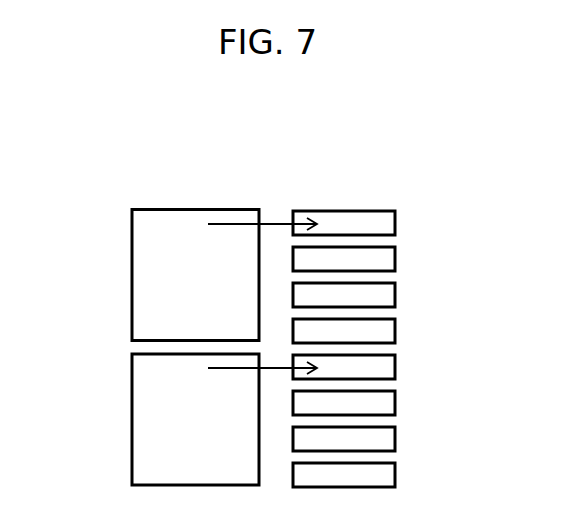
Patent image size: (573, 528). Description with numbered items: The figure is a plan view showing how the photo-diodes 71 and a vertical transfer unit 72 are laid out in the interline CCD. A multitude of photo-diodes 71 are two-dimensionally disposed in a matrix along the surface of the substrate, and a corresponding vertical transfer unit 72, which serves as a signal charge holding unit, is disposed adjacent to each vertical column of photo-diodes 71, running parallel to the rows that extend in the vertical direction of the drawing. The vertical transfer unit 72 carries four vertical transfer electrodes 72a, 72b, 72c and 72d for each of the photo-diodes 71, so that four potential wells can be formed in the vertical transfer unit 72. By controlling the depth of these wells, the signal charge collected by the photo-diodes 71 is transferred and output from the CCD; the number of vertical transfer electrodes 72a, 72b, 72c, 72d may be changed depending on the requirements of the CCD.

The photo-diode 71 is at (164, 308).
The vertical transfer unit 72 is at (353, 202).
The vertical transfer electrode 72a is at (380, 220).
The vertical transfer electrode 72b is at (380, 256).
The vertical transfer electrode 72c is at (380, 292).
The vertical transfer electrode 72d is at (380, 328).